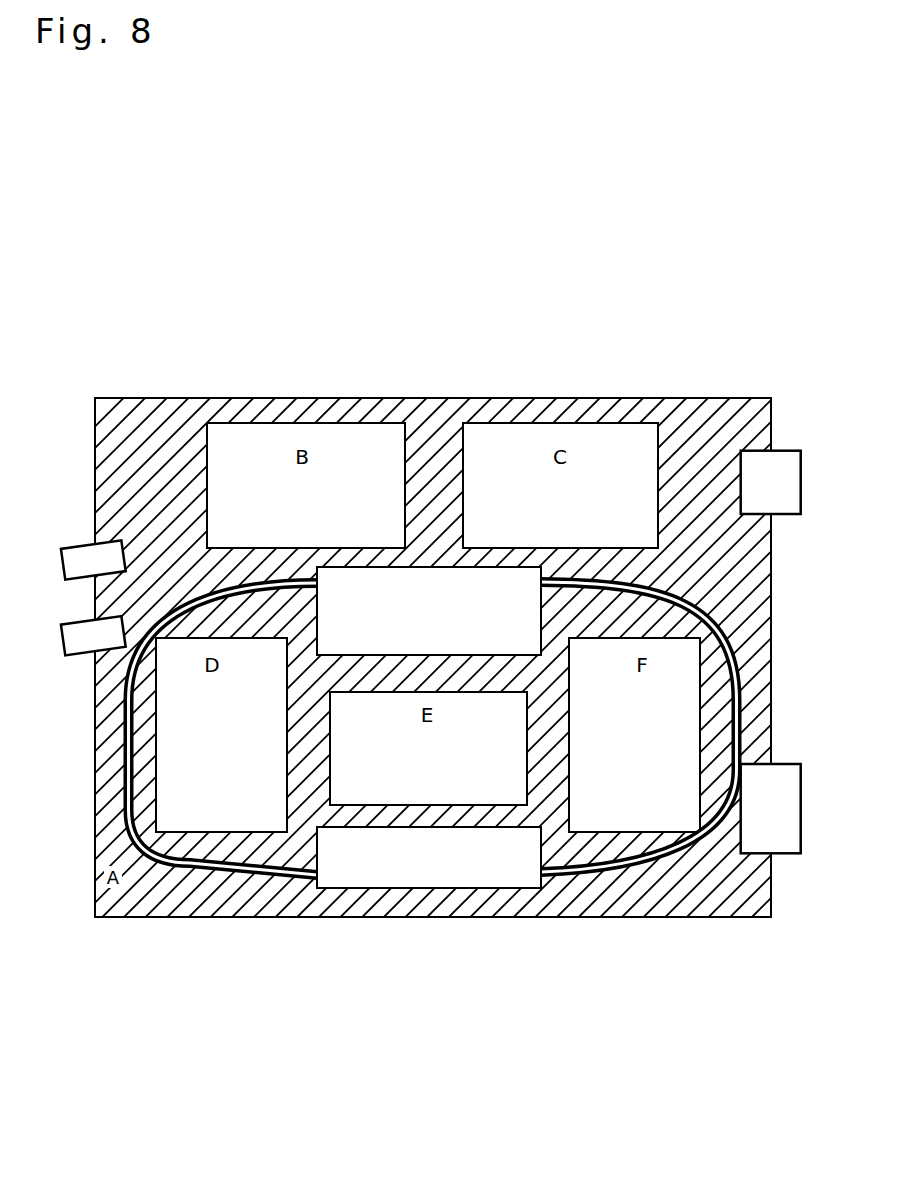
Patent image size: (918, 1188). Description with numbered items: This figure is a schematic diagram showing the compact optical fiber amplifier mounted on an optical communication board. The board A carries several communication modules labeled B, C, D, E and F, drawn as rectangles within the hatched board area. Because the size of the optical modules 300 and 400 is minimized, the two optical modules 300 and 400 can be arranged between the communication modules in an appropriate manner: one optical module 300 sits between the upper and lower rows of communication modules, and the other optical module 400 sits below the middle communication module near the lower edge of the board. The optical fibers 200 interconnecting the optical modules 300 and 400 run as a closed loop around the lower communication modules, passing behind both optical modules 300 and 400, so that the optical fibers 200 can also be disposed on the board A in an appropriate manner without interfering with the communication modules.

The optical fibers 200 is at (740, 703).
The optical module 300 is at (433, 583).
The optical module 400 is at (393, 873).